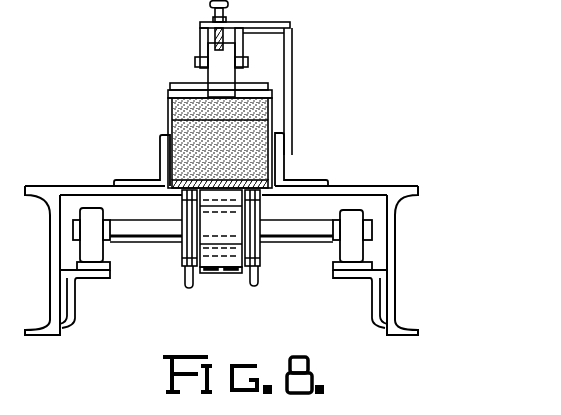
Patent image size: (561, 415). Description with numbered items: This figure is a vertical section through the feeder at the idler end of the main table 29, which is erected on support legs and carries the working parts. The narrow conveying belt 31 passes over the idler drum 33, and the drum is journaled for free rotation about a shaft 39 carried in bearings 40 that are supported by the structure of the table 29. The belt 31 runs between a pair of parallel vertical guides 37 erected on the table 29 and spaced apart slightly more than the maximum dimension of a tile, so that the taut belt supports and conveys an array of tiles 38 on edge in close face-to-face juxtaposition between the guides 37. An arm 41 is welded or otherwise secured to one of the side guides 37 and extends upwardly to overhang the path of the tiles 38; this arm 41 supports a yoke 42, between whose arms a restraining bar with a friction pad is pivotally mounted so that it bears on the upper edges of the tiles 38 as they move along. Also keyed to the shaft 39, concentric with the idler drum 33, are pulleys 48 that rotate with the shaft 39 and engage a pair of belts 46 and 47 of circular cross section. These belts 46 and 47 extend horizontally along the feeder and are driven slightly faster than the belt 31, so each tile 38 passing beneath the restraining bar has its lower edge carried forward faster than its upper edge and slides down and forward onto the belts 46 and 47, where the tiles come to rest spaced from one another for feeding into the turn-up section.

The main table 29 is at (360, 186).
The belt 31 is at (215, 270).
The idler drum 33 is at (234, 272).
The vertical guides 37 is at (160, 155).
The tiles 38 is at (170, 92).
The shaft 39 is at (300, 243).
The bearings 40 is at (105, 250).
The arm 41 is at (293, 68).
The yoke 42 is at (200, 33).
The belt 46 is at (187, 286).
The belt 47 is at (258, 284).
The pulleys 48 is at (182, 203).